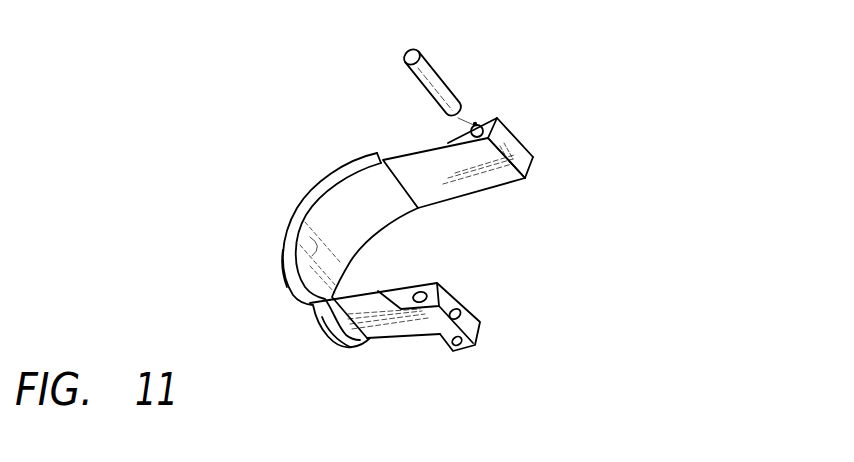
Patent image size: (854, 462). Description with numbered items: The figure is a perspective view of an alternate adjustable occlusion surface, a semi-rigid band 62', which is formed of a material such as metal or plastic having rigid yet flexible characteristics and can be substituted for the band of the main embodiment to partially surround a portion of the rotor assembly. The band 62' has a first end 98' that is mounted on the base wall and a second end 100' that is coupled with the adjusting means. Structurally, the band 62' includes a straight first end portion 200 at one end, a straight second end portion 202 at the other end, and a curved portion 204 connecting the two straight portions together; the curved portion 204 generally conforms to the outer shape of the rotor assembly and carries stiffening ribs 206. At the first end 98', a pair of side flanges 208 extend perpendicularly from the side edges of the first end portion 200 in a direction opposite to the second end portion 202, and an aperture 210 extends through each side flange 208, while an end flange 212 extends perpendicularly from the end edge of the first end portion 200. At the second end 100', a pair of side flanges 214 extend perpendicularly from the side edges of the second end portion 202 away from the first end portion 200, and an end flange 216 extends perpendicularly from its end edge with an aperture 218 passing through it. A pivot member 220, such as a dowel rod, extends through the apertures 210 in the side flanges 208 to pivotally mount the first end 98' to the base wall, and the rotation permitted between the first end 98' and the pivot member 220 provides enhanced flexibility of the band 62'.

The semi-rigid band 62' is at (414, 216).
The first end 98' is at (550, 161).
The second end 100' is at (478, 299).
The straight first end portion 200 is at (480, 178).
The straight second end portion 202 is at (385, 320).
The curved portion 204 is at (300, 257).
The stiffening ribs 206 is at (290, 283).
The side flanges 208 is at (450, 143).
The aperture 210 is at (481, 124).
The end flange 212 is at (508, 142).
The side flanges 214 is at (402, 295).
The end flange 216 is at (475, 316).
The aperture 218 is at (467, 309).
The pivot member 220 is at (425, 62).